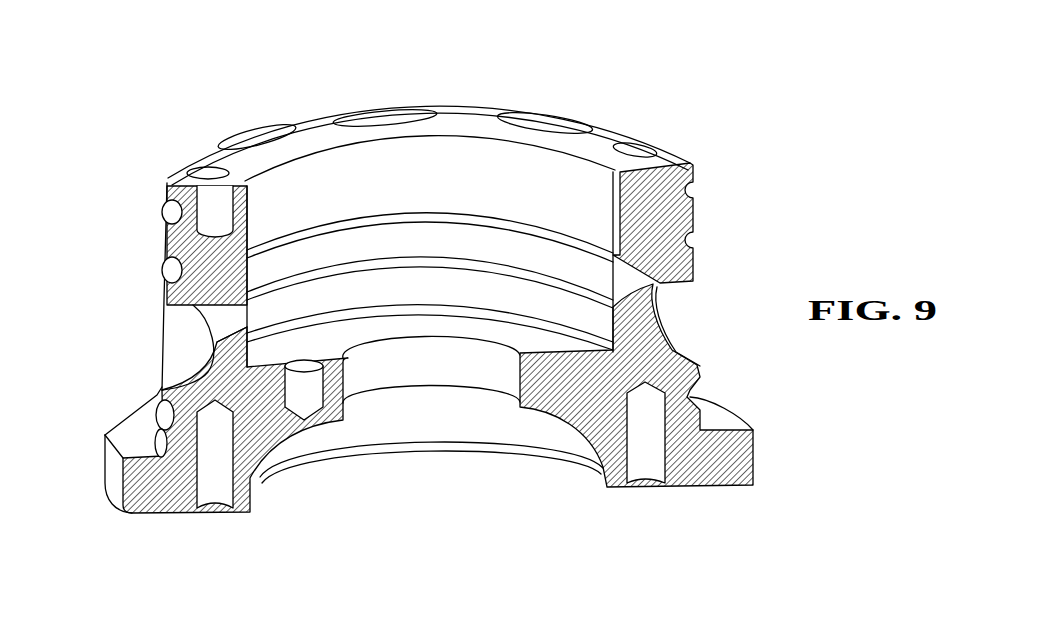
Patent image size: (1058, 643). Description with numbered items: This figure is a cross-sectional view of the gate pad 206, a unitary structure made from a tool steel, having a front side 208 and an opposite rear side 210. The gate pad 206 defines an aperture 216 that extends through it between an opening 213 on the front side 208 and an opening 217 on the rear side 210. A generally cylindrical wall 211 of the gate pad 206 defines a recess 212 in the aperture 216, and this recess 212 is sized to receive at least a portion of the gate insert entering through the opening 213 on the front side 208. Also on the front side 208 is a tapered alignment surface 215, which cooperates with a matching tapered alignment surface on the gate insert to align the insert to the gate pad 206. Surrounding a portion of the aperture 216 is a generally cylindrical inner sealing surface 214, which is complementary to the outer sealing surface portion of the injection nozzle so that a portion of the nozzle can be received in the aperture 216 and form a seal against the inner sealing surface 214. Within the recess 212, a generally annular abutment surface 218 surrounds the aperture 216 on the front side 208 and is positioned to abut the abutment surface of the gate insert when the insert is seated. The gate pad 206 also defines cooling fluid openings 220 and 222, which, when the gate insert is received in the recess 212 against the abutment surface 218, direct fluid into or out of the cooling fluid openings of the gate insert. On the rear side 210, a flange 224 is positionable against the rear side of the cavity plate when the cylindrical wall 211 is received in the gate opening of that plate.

The gate pad 206 is at (600, 133).
The front side 208 is at (404, 78).
The rear side 210 is at (398, 516).
The generally cylindrical wall 211 is at (205, 160).
The recess 212 is at (458, 158).
The opening 213 is at (519, 157).
The inner sealing surface 214 is at (444, 372).
The tapered alignment surface 215 is at (315, 136).
The aperture 216 is at (471, 375).
The opening 217 is at (304, 504).
The abutment surface 218 is at (522, 340).
The cooling fluid opening 220 is at (176, 347).
The cooling fluid opening 222 is at (682, 317).
The flange 224 is at (717, 420).